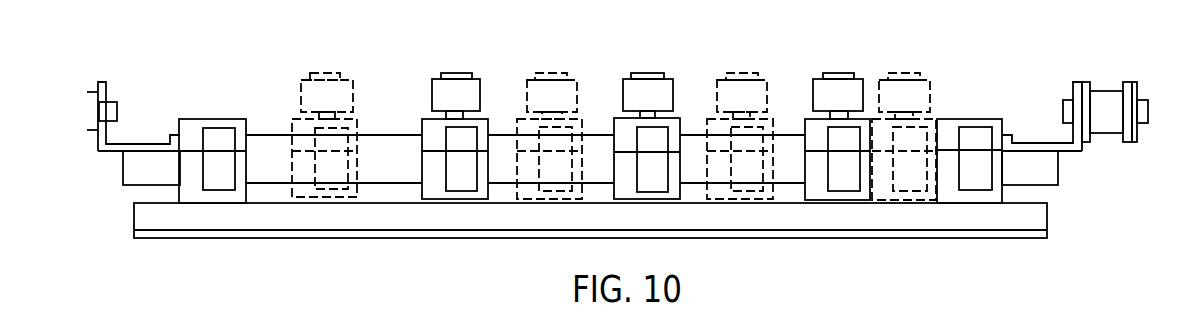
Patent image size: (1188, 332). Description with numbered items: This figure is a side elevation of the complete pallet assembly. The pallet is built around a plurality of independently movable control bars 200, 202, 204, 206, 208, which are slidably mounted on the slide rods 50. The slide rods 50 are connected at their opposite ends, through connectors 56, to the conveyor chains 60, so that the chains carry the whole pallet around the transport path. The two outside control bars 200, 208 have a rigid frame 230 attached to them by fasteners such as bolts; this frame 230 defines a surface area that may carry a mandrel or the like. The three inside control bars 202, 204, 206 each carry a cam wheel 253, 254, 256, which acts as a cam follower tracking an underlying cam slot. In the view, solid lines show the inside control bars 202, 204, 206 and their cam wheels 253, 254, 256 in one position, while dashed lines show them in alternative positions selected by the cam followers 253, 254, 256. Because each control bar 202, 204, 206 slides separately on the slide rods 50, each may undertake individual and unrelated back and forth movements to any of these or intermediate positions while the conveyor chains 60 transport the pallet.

The slide rods 50 is at (387, 173).
The connectors 56 is at (150, 143).
The conveyor chains 60 is at (118, 109).
The control bar 200 is at (233, 118).
The control bar 202 is at (458, 120).
The control bar 204 is at (680, 106).
The control bar 206 is at (856, 110).
The control bar 208 is at (982, 118).
The rigid frame 230 is at (272, 217).
The cam wheel 253 is at (432, 95).
The cam wheel 254 is at (673, 82).
The cam wheel 256 is at (823, 88).